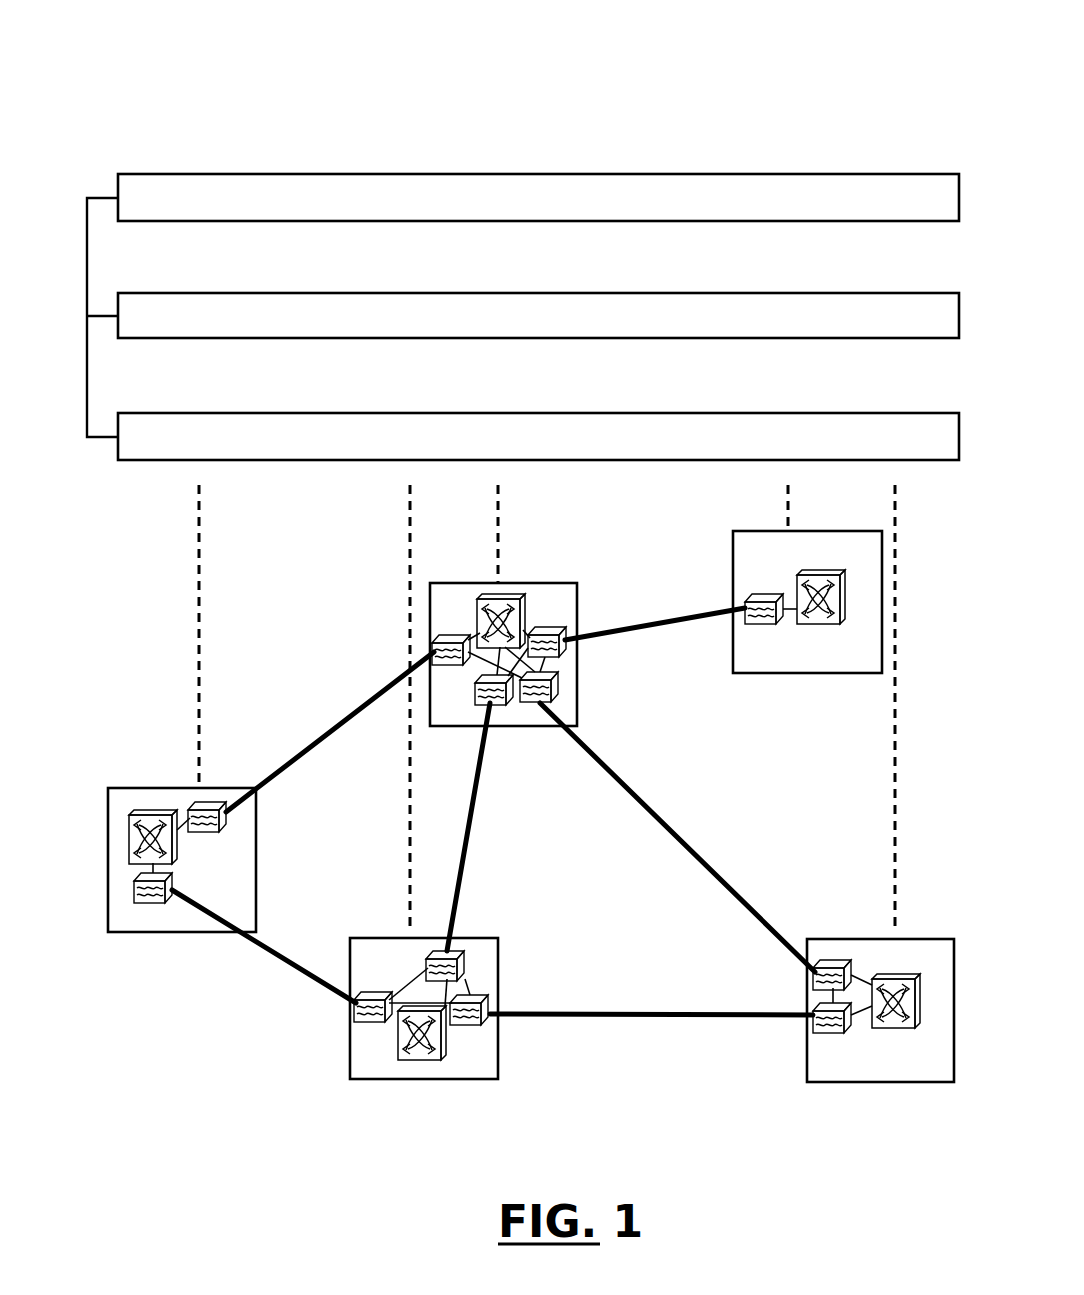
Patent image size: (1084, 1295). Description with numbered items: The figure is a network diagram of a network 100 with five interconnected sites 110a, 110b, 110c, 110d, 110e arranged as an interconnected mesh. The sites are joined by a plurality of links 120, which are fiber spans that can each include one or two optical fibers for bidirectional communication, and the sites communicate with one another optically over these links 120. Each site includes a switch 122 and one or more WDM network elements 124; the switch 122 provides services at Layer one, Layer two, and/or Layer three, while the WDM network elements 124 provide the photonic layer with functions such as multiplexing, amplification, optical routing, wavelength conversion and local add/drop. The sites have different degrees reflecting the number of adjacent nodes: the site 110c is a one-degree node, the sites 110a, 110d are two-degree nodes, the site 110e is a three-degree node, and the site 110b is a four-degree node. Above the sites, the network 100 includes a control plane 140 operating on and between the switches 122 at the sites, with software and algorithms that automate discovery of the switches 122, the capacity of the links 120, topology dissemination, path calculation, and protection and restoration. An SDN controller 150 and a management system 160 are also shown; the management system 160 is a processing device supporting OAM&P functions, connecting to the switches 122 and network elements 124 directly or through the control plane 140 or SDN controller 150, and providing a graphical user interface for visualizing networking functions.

The network 100 is at (622, 56).
The management system 160 is at (697, 174).
The SDN controller 150 is at (697, 293).
The control plane 140 is at (697, 413).
The links 120 is at (323, 738).
The site 110a is at (108, 895).
The site 110b is at (540, 583).
The site 110c is at (824, 611).
The site 110d is at (850, 1082).
The site 110e is at (350, 1060).
The switch 122 is at (825, 570).
The WDM network element 124 is at (768, 592).